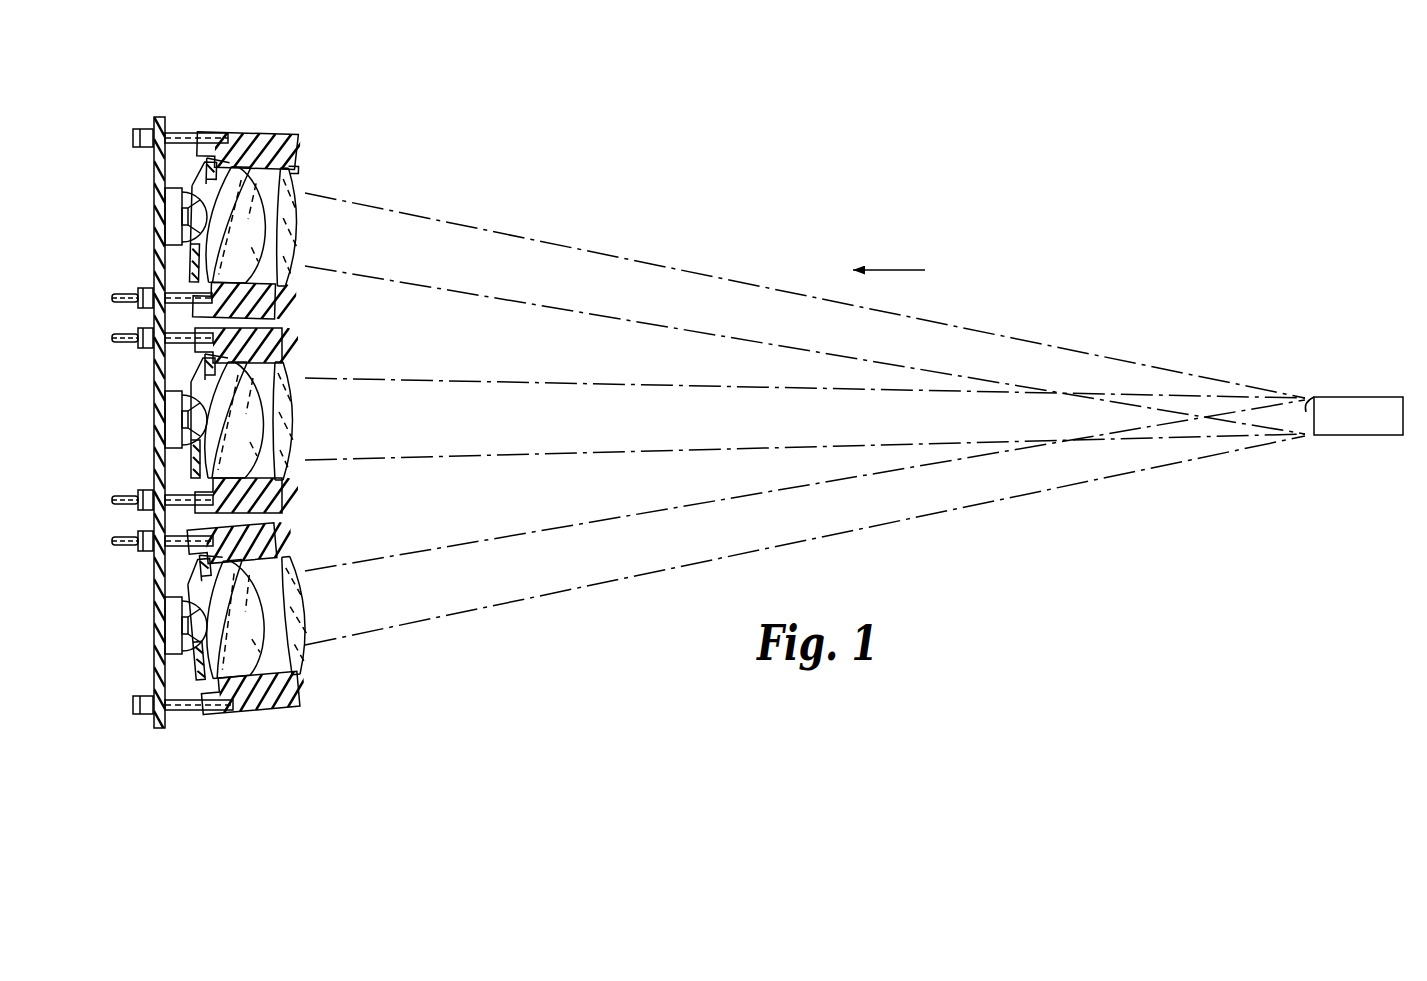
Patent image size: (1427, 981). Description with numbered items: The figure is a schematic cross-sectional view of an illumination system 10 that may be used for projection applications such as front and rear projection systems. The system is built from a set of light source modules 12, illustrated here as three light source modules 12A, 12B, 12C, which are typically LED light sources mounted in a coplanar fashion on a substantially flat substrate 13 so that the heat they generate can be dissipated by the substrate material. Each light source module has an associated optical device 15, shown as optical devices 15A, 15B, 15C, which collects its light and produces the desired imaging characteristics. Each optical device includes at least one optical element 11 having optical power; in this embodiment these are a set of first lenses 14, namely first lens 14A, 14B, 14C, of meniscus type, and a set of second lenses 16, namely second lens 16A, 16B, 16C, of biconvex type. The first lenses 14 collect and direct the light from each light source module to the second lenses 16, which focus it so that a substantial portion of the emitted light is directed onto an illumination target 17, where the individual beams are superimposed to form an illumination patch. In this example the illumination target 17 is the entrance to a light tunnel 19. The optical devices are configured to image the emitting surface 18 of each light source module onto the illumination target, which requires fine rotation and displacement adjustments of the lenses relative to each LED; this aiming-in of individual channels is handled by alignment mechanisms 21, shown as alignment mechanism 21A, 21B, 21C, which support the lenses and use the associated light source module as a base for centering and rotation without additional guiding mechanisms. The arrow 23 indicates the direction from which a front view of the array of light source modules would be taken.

The illumination system 10 is at (340, 389).
The optical element 11 is at (290, 412).
The light source modules 12 is at (152, 376).
The light source module 12A is at (190, 243).
The light source module 12B is at (190, 405).
The light source module 12C is at (190, 612).
The substrate 13 is at (158, 177).
The first lenses 14 is at (283, 422).
The first lens 14A is at (252, 250).
The first lens 14B is at (246, 457).
The first lens 14C is at (250, 648).
The optical devices 15 is at (289, 397).
The optical device 15A is at (292, 199).
The optical device 15B is at (285, 409).
The optical device 15C is at (279, 602).
The second lenses 16 is at (326, 410).
The second lens 16A is at (302, 236).
The second lens 16B is at (296, 403).
The second lens 16C is at (303, 630).
The illumination target 17 is at (1314, 403).
The emitting surface 18 is at (185, 211).
The light tunnel 19 is at (1357, 402).
The alignment mechanism 21 is at (222, 128).
The alignment mechanism 21A is at (294, 143).
The alignment mechanism 21B is at (283, 331).
The alignment mechanism 21C is at (275, 527).
The arrow 23 is at (890, 270).